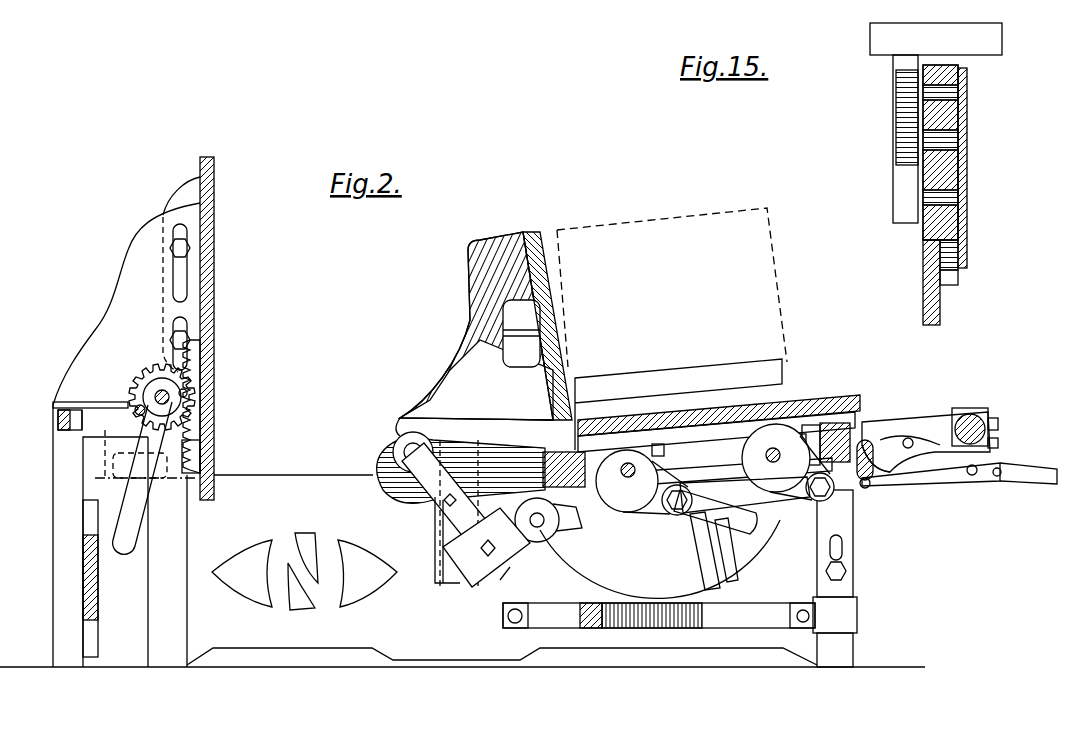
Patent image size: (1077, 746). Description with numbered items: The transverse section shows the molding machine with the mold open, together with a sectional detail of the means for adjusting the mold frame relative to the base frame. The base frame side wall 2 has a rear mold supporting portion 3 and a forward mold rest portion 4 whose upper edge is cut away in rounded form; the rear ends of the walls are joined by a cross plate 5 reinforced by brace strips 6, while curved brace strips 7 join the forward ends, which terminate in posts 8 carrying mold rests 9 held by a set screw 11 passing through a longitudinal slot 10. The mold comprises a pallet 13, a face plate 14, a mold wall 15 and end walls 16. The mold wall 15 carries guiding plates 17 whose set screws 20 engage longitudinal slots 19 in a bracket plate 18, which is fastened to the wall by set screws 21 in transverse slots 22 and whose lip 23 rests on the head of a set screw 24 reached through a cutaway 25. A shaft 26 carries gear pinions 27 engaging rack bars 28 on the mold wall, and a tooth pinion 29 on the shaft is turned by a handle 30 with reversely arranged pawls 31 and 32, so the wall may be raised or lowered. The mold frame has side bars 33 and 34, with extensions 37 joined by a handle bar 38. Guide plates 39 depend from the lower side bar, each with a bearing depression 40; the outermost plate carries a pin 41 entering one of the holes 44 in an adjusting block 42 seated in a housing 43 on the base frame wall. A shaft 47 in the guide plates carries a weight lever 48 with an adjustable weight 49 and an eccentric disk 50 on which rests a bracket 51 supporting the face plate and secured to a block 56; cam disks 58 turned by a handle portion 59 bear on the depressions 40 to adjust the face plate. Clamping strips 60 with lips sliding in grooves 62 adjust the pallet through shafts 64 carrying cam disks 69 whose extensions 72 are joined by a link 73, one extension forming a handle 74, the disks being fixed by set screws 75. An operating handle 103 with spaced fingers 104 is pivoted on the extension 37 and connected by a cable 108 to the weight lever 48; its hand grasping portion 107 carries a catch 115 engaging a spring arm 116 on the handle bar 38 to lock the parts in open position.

In FIG. 2, the wall 2 is at (433, 650).
In FIG. 2, the mold supporting portion 3 is at (304, 548).
In FIG. 2, the mold rest portion 4 is at (645, 596).
In FIG. 2, the cross plate 5 is at (98, 576).
In FIG. 2, the brace strips 6 is at (135, 552).
In FIG. 2, the curved brace strips 7 is at (635, 632).
In FIG. 2, the posts 8 is at (840, 645).
In FIG. 2, the mold rests 9 is at (840, 518).
In FIG. 2, the slot 10 is at (845, 548).
In FIG. 2, the set screw 11 is at (846, 570).
In FIG. 2, the pallet 13 is at (812, 400).
In FIG. 2, the face plate 14 is at (560, 342).
In FIG. 2, the mold wall 15 is at (231, 312).
In FIG. 2, the end walls 16 is at (675, 378).
In FIG. 2, the guiding plates 17 is at (200, 183).
In FIG. 2, the bracket plate 18 is at (120, 304).
In FIG. 2, the slots 19 is at (180, 322).
In FIG. 2, the set screws 20 is at (172, 247).
In FIG. 2, the set screws 21 is at (125, 470).
In FIG. 2, the slots 22 is at (108, 466).
In FIG. 2, the lips 23 is at (80, 400).
In FIG. 2, the set screw 24 is at (57, 416).
In FIG. 2, the cutaway portion 25 is at (57, 428).
In FIG. 2, the shaft 26 is at (170, 406).
In FIG. 2, the gear pinions 27 is at (150, 376).
In FIG. 2, the rack bars 28 is at (196, 370).
In FIG. 2, the tooth pinion 29 is at (186, 392).
In FIG. 2, the handle 30 is at (133, 521).
In FIG. 2, the pawl 31 is at (200, 438).
In FIG. 2, the pawl 32 is at (138, 415).
In FIG. 2, the side bar 33 is at (867, 437).
In FIG. 2, the side bar 34 is at (399, 456).
In FIG. 15, the side bar 34 is at (936, 39).
In FIG. 2, the extensions 37 is at (920, 416).
In FIG. 2, the handle bar 38 is at (970, 414).
In FIG. 2, the guide plates 39 is at (400, 504).
In FIG. 15, the guide plates 39 is at (893, 183).
In FIG. 15, the bearing depression 40 is at (900, 90).
In FIG. 15, the pin 41 is at (958, 143).
In FIG. 2, the adjusting block 42 is at (452, 575).
In FIG. 15, the adjusting block 42 is at (932, 235).
In FIG. 15, the housing 43 is at (960, 133).
In FIG. 15, the holes 44 is at (960, 92).
In FIG. 2, the shaft 47 is at (397, 440).
In FIG. 2, the weight lever 48 is at (460, 510).
In FIG. 2, the adjustable weight 49 is at (482, 587).
In FIG. 2, the eccentric disk 50 is at (398, 430).
In FIG. 2, the bracket 51 is at (478, 318).
In FIG. 2, the block 56 is at (525, 318).
In FIG. 2, the cam disks 58 is at (547, 537).
In FIG. 2, the handle portion 59 is at (582, 528).
In FIG. 2, the clamping strip 60 is at (840, 402).
In FIG. 2, the grooves 62 is at (655, 470).
In FIG. 2, the shafts 64 is at (626, 478).
In FIG. 2, the cam disks 69 is at (641, 497).
In FIG. 2, the extensions 72 is at (805, 480).
In FIG. 2, the link 73 is at (765, 498).
In FIG. 2, the handle 74 is at (715, 540).
In FIG. 2, the set screws 75 is at (658, 444).
In FIG. 2, the operating handle 103 is at (978, 482).
In FIG. 2, the fingers 104 is at (880, 462).
In FIG. 2, the hand grasping portion 107 is at (1035, 487).
In FIG. 2, the cable 108 is at (928, 477).
In FIG. 2, the catch 115 is at (998, 442).
In FIG. 2, the spring arm 116 is at (998, 428).